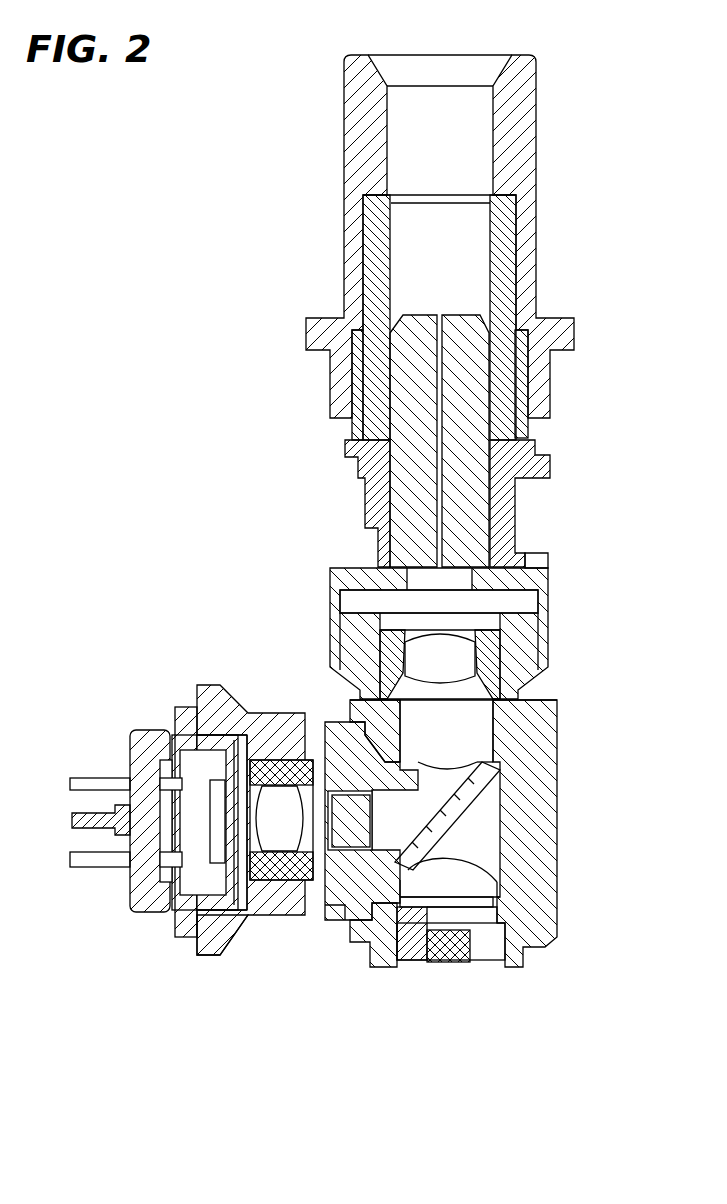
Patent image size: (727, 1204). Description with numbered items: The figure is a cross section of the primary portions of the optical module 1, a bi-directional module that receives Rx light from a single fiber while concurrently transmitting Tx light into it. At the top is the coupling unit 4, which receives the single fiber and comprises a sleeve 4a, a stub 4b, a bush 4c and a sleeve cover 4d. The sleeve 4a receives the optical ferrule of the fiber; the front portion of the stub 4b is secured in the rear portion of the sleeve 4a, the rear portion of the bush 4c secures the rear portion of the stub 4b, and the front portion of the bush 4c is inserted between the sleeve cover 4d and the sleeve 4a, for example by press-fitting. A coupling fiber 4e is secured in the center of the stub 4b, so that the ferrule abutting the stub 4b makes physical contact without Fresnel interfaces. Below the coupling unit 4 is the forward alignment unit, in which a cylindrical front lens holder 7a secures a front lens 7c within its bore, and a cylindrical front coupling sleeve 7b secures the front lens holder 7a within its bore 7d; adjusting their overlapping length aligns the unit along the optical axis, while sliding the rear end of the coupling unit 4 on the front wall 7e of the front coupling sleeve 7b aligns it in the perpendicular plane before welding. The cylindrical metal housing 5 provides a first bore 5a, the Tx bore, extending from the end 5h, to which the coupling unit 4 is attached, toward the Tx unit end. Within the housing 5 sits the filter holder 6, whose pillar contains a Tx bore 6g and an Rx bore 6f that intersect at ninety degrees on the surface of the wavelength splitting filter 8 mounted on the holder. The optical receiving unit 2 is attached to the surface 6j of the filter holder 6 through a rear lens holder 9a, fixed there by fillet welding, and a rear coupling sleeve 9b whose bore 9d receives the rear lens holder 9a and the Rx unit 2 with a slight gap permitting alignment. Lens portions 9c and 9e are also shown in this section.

The optical module 1 is at (124, 229).
The optical receiving unit 2 is at (150, 913).
The coupling unit 4 is at (342, 185).
The sleeve 4a is at (372, 240).
The stub 4b is at (413, 322).
The bush 4c is at (346, 430).
The sleeve cover 4d is at (348, 100).
The coupling fiber 4e is at (445, 320).
The housing 5 is at (548, 836).
The first bore 5a is at (463, 732).
The end 5h is at (538, 692).
The filter holder 6 is at (338, 925).
The Rx bore 6f is at (390, 838).
The Tx bore 6g is at (463, 780).
The surface 6j is at (318, 915).
The front lens holder 7a is at (348, 656).
The front coupling sleeve 7b is at (331, 586).
The front lens 7c is at (478, 662).
The bore 7d is at (507, 600).
The front wall 7e is at (542, 563).
The wavelength splitting filter 8 is at (457, 840).
The rear lens holder 9a is at (270, 728).
The rear coupling sleeve 9b is at (227, 690).
The lens holding portion 9c is at (300, 727).
The bore 9d is at (245, 920).
The lens holder flange 9e is at (200, 703).